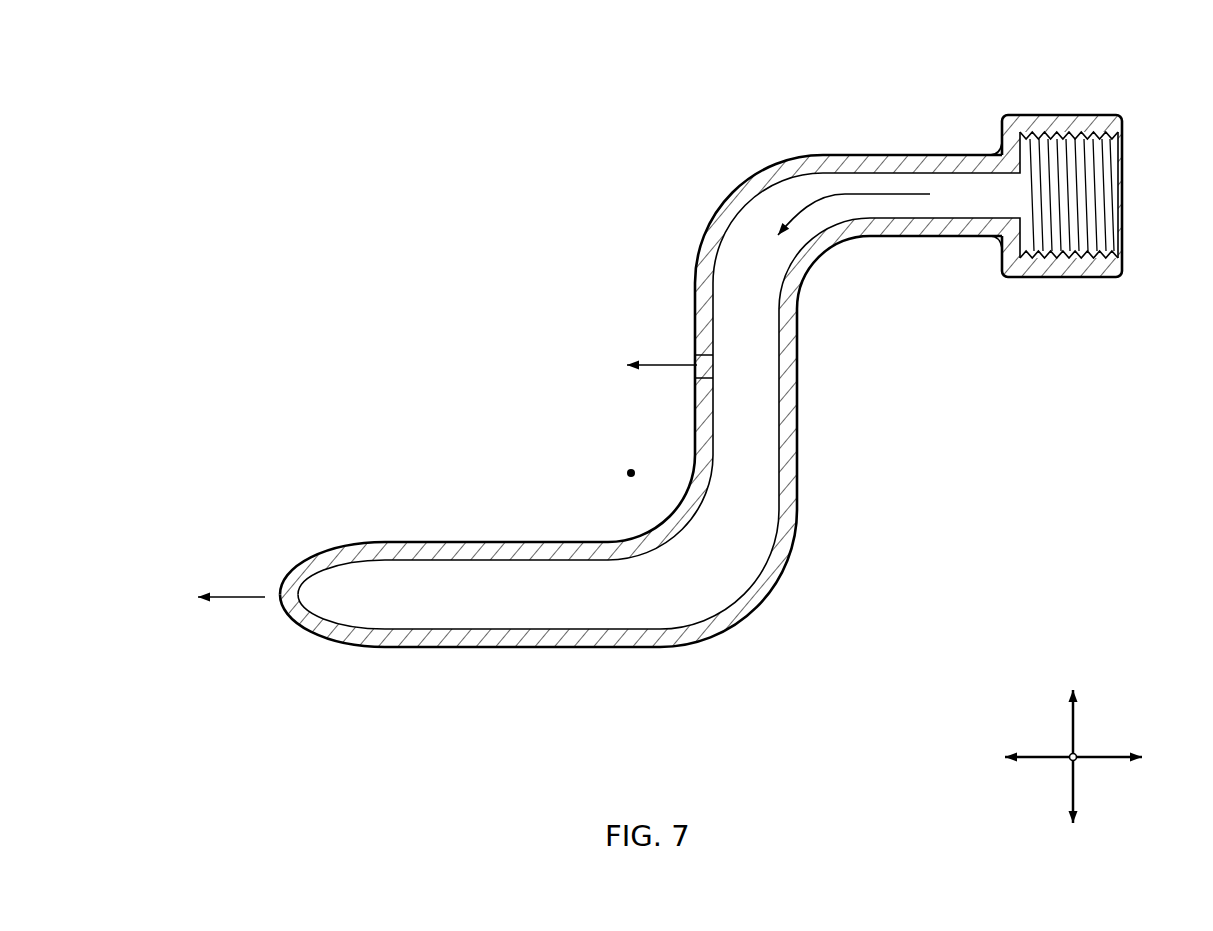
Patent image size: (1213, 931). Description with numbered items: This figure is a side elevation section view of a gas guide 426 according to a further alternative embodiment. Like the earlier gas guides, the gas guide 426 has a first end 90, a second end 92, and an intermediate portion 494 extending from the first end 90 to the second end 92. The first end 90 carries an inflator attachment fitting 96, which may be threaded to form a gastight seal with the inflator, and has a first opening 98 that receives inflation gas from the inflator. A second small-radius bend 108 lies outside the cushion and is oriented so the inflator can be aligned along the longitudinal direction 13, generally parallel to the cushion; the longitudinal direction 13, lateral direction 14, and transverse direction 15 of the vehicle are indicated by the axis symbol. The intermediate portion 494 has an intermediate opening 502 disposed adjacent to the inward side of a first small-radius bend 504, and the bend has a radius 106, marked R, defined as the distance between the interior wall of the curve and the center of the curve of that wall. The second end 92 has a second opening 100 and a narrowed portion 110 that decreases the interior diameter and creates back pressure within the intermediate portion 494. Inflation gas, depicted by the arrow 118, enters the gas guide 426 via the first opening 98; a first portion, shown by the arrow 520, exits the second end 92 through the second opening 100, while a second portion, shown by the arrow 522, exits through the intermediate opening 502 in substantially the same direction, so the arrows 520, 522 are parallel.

The longitudinal direction 13 is at (1107, 760).
The lateral direction 14 is at (1068, 760).
The transverse direction 15 is at (1075, 728).
The first end 90 is at (935, 137).
The second end 92 is at (360, 528).
The inflator attachment fitting 96 is at (1065, 115).
The first opening 98 is at (1015, 173).
The second opening 100 is at (283, 590).
The radius 106 is at (657, 490).
The second small-radius bend 108 is at (725, 185).
The narrowed portion 110 is at (322, 553).
The arrow 118 is at (858, 195).
The gas guide 426 is at (545, 155).
The intermediate portion 494 is at (683, 432).
The intermediate opening 502 is at (693, 358).
The first small-radius bend 504 is at (762, 633).
The arrow 520 is at (230, 600).
The arrow 522 is at (650, 365).
The bend radius R is at (668, 512).